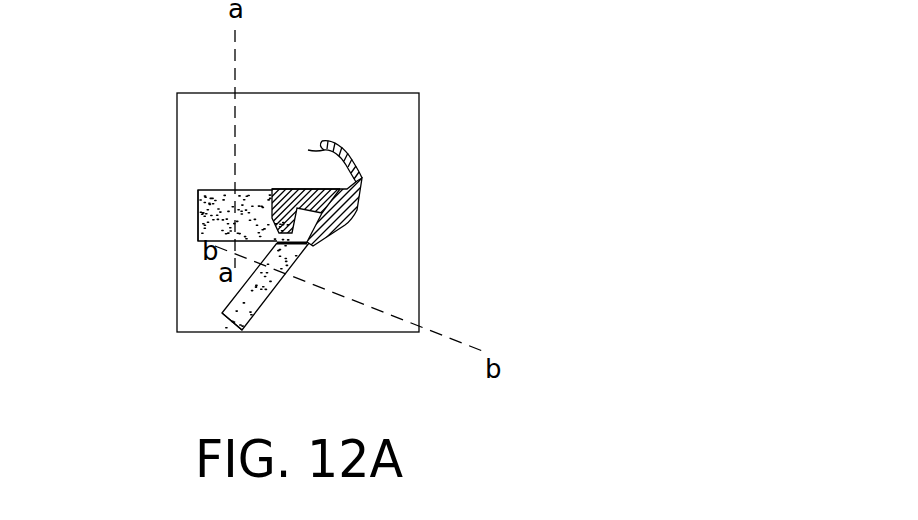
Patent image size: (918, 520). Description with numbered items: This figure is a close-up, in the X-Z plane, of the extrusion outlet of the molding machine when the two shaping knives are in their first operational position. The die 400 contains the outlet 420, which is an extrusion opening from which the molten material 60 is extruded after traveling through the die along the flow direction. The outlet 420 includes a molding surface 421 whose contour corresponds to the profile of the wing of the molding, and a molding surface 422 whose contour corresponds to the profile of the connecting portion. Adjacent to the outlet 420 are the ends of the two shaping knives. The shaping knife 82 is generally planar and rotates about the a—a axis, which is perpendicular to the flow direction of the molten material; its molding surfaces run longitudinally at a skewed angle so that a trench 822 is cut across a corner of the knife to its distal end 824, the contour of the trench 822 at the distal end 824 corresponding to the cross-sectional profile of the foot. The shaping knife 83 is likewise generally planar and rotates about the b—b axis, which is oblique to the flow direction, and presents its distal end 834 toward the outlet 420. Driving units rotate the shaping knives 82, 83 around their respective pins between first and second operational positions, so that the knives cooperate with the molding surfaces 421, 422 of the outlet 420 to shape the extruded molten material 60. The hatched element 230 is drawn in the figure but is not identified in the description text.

The shaping knife 82 is at (210, 185).
The distal end 824 is at (197, 217).
The trench 822 is at (290, 213).
The shaping knife 83 is at (279, 287).
The distal end 834 is at (252, 318).
The contact block 230 is at (302, 188).
The outlet 420 is at (373, 178).
The molding surface 421 is at (363, 177).
The molding surface 422 is at (311, 184).
The molten material 60 is at (356, 152).
The die 400 is at (422, 207).